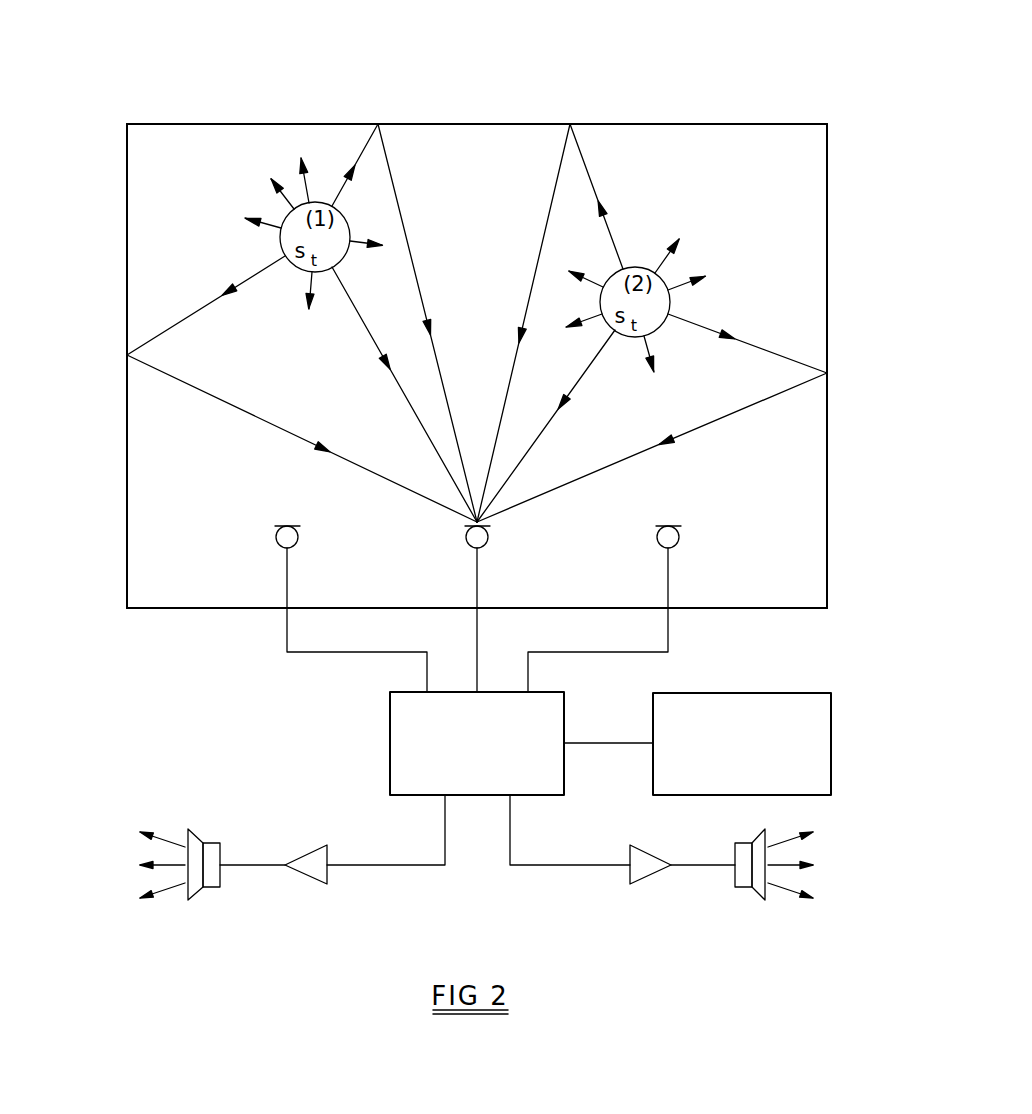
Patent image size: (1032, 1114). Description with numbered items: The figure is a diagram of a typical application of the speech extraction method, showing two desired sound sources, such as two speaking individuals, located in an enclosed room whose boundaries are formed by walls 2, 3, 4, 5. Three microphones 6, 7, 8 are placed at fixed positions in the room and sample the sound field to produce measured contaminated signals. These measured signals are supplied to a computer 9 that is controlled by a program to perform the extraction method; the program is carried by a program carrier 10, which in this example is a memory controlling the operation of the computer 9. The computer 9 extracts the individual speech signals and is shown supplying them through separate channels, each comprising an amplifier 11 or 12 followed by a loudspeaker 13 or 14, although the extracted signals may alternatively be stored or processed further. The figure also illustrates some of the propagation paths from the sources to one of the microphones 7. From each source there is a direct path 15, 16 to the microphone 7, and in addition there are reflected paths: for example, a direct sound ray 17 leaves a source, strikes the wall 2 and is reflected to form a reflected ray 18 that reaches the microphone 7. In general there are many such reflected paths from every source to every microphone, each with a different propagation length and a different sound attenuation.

The wall 2 is at (465, 124).
The wall 3 is at (827, 250).
The wall 4 is at (190, 608).
The wall 5 is at (127, 477).
The microphone 6 is at (287, 525).
The microphone 7 is at (466, 536).
The microphone 8 is at (670, 527).
The computer 9 is at (390, 742).
The program carrier 10 is at (831, 738).
The amplifier 11 is at (310, 873).
The amplifier 12 is at (645, 875).
The loudspeaker 13 is at (197, 888).
The loudspeaker 14 is at (755, 890).
The direct path 15 is at (372, 352).
The direct path 16 is at (590, 370).
The direct sound ray 17 is at (368, 124).
The reflected ray 18 is at (405, 208).